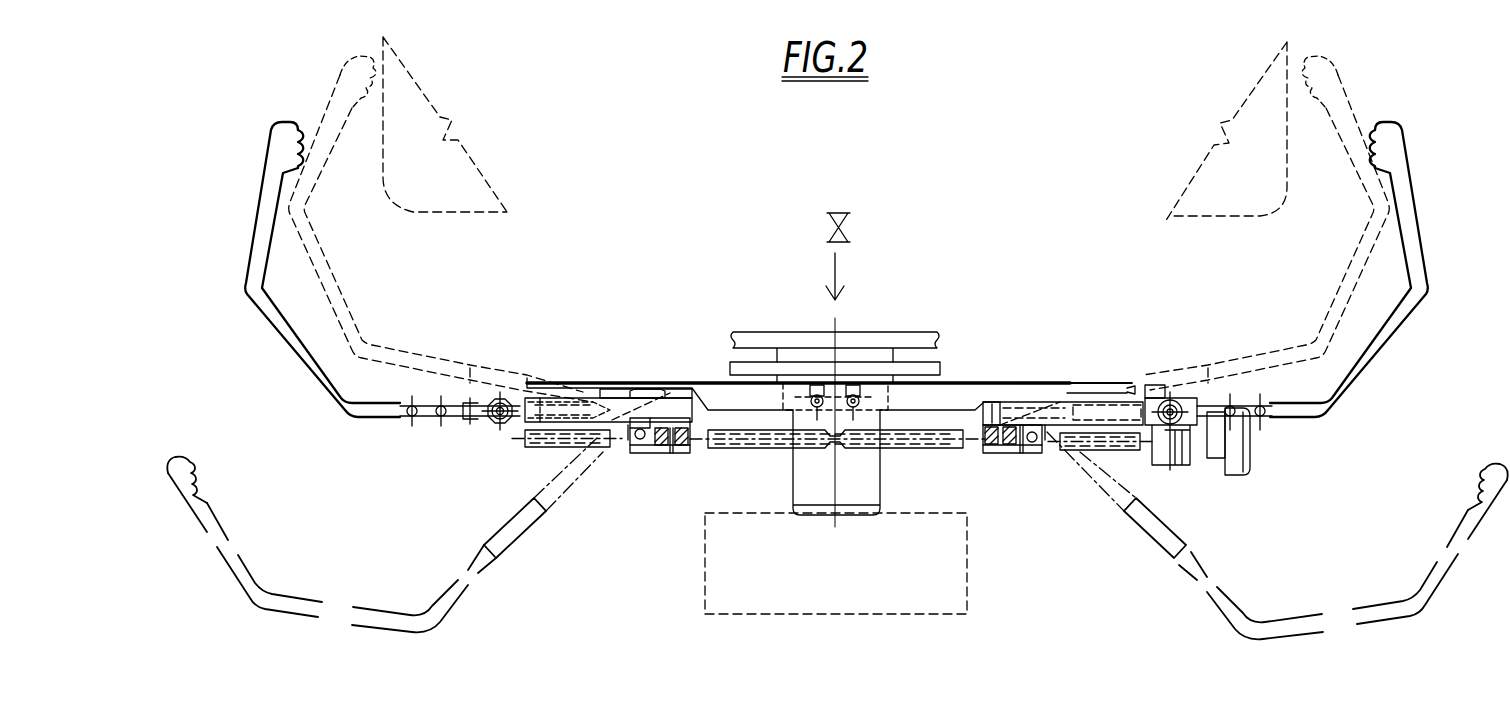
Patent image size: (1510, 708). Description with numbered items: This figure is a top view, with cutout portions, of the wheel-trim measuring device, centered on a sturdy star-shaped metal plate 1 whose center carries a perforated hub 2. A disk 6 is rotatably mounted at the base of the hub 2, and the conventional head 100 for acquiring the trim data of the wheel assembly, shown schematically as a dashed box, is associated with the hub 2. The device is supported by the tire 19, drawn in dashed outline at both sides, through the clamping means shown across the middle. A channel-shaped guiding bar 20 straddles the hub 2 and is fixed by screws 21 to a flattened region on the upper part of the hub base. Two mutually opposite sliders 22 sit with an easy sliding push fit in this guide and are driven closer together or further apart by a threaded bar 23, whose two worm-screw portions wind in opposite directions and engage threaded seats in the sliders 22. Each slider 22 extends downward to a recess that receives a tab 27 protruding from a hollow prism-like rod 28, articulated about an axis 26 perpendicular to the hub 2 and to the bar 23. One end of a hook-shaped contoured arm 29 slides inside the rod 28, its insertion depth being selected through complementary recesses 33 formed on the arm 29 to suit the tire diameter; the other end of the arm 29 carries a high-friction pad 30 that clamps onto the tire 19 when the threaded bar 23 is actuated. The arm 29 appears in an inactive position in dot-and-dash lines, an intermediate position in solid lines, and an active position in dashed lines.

The metal plate 1 is at (758, 331).
The perforated hub 2 is at (795, 486).
The disk 6 is at (944, 367).
The tire 19 is at (463, 172).
The guiding bar 20 is at (975, 392).
The screws 21 is at (853, 396).
The sliders 22 is at (692, 447).
The threaded bar 23 is at (533, 450).
The axis 26 is at (1032, 445).
The tab 27 is at (628, 426).
The hollow prism-like rod 28 is at (663, 393).
The contoured arm 29 is at (292, 353).
The pad 30 is at (299, 165).
The complementary recesses 33 is at (450, 425).
The head 100 is at (703, 590).